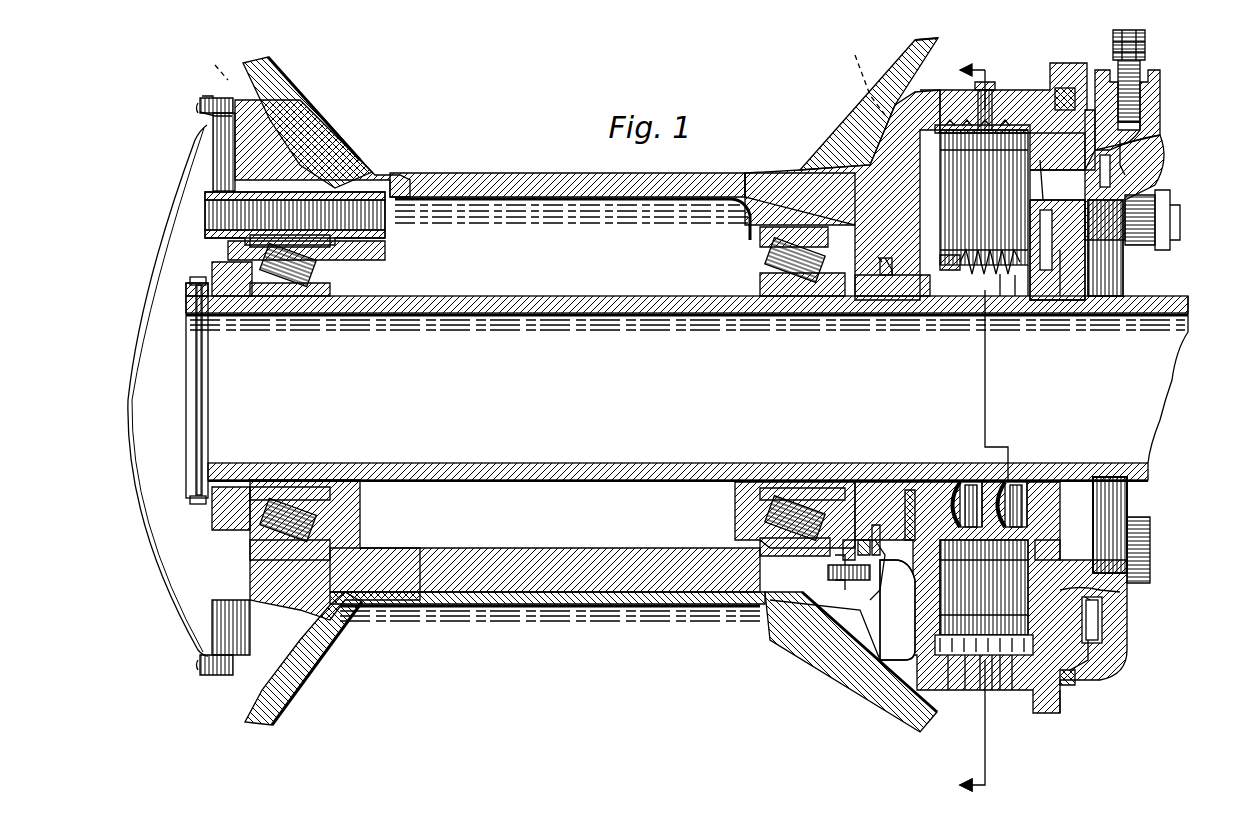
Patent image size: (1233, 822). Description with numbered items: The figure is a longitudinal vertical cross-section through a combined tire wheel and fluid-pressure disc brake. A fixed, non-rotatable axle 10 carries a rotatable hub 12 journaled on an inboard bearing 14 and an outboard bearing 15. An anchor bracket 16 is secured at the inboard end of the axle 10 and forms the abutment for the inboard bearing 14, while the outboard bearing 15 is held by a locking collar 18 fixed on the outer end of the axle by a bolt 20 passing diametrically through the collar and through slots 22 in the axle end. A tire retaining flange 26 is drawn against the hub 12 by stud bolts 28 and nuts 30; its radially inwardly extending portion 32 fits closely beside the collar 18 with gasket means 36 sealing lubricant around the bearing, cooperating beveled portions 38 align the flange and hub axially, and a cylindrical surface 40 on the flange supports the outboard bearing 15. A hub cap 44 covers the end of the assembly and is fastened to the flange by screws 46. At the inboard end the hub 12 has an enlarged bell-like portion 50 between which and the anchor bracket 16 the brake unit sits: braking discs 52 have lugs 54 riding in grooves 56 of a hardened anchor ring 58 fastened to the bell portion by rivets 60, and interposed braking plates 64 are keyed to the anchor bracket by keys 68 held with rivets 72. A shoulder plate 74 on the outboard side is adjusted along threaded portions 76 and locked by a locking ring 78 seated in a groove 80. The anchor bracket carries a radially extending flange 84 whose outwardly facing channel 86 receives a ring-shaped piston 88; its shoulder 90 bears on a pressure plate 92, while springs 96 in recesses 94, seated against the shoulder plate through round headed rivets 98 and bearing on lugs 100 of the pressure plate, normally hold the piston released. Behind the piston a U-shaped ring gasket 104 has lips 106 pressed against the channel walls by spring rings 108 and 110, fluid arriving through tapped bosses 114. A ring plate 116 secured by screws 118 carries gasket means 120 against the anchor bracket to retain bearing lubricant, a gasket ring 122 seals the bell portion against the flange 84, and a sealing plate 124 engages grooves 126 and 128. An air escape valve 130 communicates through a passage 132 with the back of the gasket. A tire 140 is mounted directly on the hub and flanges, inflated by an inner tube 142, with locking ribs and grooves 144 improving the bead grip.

The axle 10 is at (460, 296).
The hub 12 is at (470, 170).
The inboard bearing 14 is at (783, 500).
The outboard bearing 15 is at (292, 505).
The anchor bracket 16 is at (893, 297).
The locking collar 18 is at (186, 288).
The bolt 20 is at (190, 400).
The slots 22 is at (215, 310).
The tire retaining flange 26 is at (285, 130).
The stud bolts 28 is at (228, 222).
The nuts 30 is at (205, 197).
The radially inwardly extending portion 32 is at (228, 262).
The gasket means 36 is at (225, 500).
The beveled portion 38 is at (325, 185).
The cylindrical surface 40 is at (290, 130).
The hub cap 44 is at (180, 150).
The screws 46 is at (200, 100).
The bell-like portion 50 is at (965, 690).
The braking discs 52 is at (952, 690).
The lugs 54 is at (1000, 690).
The grooves 56 is at (1020, 660).
The anchor ring 58 is at (985, 690).
The rivets 60 is at (975, 85).
The braking plates 64 is at (1005, 690).
The keys 68 is at (1050, 520).
The rivets 72 is at (1012, 482).
The shoulder plate 74 is at (930, 280).
The threaded portions 76 is at (918, 510).
The locking ring 78 is at (900, 540).
The groove 80 is at (892, 525).
The radially extending flange 84 is at (1085, 530).
The channel 86 is at (1102, 617).
The piston 88 is at (1070, 140).
The shoulder 90 is at (1115, 598).
The pressure plate 92 is at (1028, 280).
The recesses 94 is at (1068, 290).
The springs 96 is at (1003, 280).
The round headed rivet 98 is at (962, 280).
The lugs 100 is at (1018, 300).
The ring gasket 104 is at (1110, 170).
The flange-like lips 106 is at (1180, 620).
The spring ring 108 is at (1115, 148).
The spring ring 110 is at (1120, 182).
The bosses 114 is at (1123, 250).
The ring plate 116 is at (846, 540).
The screws 118 is at (830, 630).
The gasket means 120 is at (862, 540).
The gasket ring 122 is at (1070, 690).
The sealing plate 124 is at (1040, 160).
The groove 126 is at (1062, 88).
The groove 128 is at (1105, 210).
The air escape valve 130 is at (1148, 70).
The passage 132 is at (1155, 130).
The tire 140 is at (845, 138).
The inner tube 142 is at (742, 172).
The locking ribs and grooves 144 is at (216, 58).